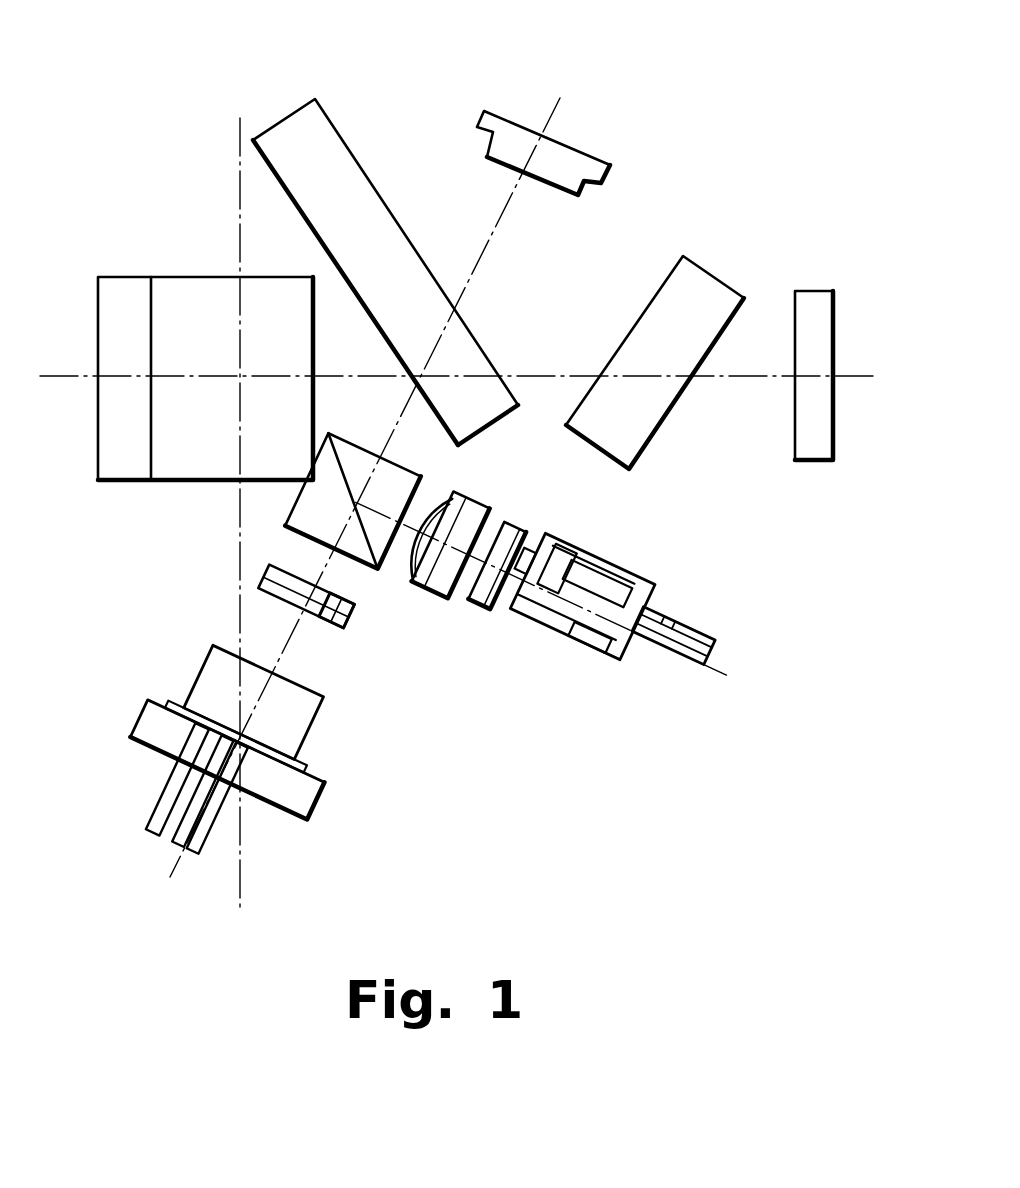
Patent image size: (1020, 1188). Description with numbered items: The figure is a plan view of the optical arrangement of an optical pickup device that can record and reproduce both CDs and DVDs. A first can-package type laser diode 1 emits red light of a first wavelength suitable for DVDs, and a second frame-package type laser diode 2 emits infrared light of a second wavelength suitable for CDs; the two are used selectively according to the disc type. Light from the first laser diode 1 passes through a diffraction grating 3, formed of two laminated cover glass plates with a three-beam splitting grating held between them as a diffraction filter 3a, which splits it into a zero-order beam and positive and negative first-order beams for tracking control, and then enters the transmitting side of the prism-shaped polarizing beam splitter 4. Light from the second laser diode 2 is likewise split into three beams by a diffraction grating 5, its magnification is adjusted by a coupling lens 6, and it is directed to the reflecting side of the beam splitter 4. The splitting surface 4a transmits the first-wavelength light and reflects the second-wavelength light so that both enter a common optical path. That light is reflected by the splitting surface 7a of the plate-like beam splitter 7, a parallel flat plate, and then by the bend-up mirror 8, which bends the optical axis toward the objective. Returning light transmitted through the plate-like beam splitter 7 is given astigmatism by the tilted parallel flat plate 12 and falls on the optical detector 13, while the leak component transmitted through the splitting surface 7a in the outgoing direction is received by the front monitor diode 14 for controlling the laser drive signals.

The first can-package type laser diode 1 is at (283, 793).
The second frame-package type laser diode 2 is at (633, 575).
The diffraction grating 3 is at (317, 608).
The diffraction filter 3a is at (335, 589).
The polarizing beam splitter 4 is at (302, 508).
The splitting surface 4a is at (366, 528).
The diffraction grating 5 is at (477, 610).
The coupling lens 6 is at (463, 508).
The plate-like beam splitter 7 is at (323, 133).
The splitting surface 7a is at (280, 188).
The bend-up mirror 8 is at (197, 297).
The parallel flat plate 12 is at (700, 296).
The optical detector 13 is at (822, 327).
The front monitor diode 14 is at (571, 160).